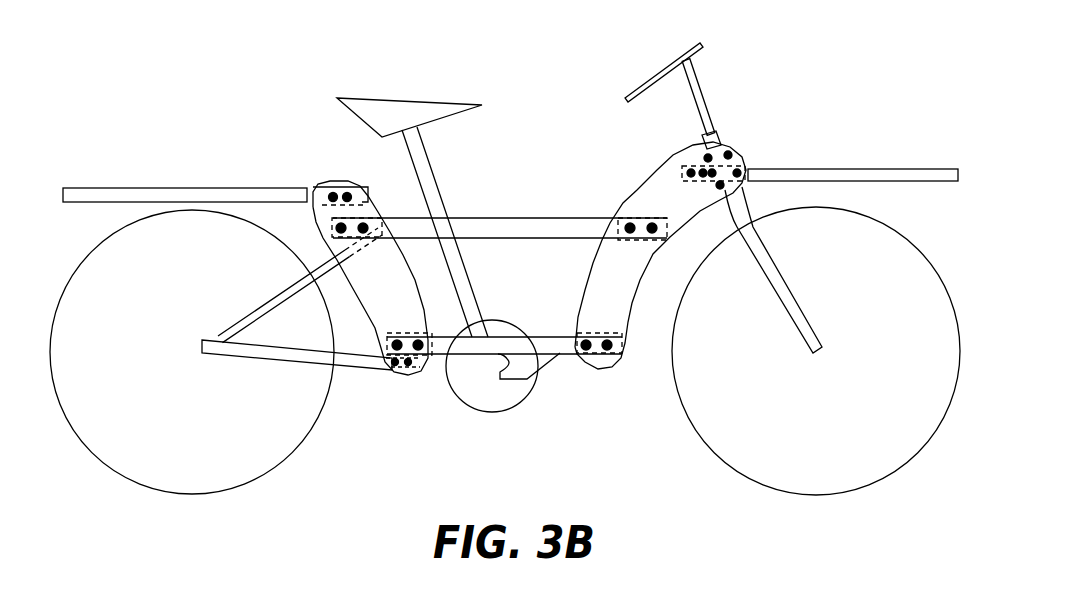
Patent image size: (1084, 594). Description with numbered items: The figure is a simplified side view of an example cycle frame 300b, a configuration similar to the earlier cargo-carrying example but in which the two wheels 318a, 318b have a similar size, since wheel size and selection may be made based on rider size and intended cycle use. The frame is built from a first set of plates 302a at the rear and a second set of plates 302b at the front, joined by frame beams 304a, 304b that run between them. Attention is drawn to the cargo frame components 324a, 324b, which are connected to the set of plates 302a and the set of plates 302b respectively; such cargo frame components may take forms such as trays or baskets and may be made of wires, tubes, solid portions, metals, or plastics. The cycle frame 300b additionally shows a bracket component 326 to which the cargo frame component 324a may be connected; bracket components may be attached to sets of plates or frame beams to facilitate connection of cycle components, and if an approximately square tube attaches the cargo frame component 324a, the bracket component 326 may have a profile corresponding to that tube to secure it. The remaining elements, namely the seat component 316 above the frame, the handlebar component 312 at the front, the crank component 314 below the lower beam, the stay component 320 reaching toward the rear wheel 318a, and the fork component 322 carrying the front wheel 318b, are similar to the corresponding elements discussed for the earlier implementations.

The cycle frame 300b is at (190, 78).
The first set of plates 302a is at (376, 202).
The second set of plates 302b is at (643, 193).
The frame beam 304a is at (564, 357).
The frame beam 304b is at (545, 215).
The handlebar component 312 is at (704, 92).
The crank component 314 is at (490, 412).
The seat component 316 is at (430, 98).
The wheel 318a is at (81, 264).
The wheel 318b is at (920, 248).
The stay component 320 is at (223, 353).
The fork component 322 is at (778, 297).
The cargo frame component 324a is at (174, 187).
The cargo frame component 324b is at (875, 167).
The bracket component 326 is at (315, 184).